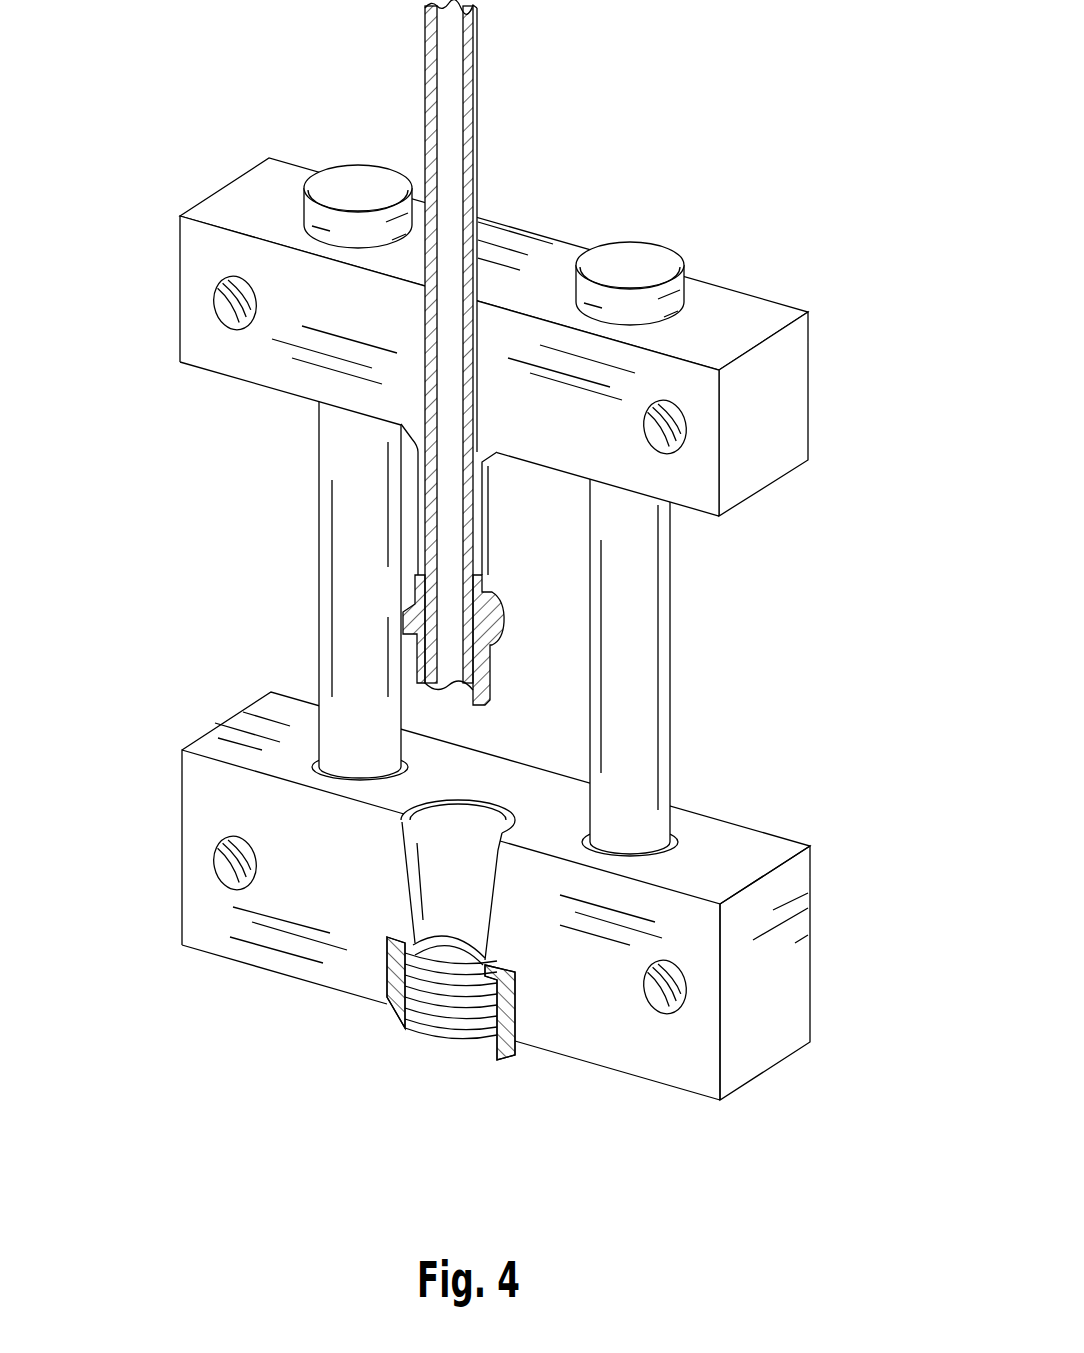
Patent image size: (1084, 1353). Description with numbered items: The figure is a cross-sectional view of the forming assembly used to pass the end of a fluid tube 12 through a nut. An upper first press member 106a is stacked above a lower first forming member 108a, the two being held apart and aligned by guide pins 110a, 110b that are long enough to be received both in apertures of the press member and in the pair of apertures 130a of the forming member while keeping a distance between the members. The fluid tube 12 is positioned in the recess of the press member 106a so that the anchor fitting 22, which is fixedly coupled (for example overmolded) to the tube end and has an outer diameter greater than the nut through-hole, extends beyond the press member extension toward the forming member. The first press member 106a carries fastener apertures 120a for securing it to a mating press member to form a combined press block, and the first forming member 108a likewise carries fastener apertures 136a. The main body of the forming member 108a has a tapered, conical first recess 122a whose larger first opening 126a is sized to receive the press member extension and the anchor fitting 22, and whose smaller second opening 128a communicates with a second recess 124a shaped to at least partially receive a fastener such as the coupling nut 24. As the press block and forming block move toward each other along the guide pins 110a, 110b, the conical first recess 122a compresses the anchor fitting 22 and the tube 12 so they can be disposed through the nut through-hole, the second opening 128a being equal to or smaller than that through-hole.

The fluid tube 12 is at (495, 58).
The anchor fitting 22 is at (493, 620).
The coupling nut 24 is at (503, 1063).
The first press member 106a is at (773, 408).
The first forming member 108a is at (788, 1005).
The guide pin 110a is at (362, 187).
The guide pin 110b is at (650, 263).
The fastener apertures 120a is at (212, 297).
The first recess 122a is at (452, 840).
The second recess 124a is at (370, 1022).
The first opening 126a is at (493, 817).
The second opening 128a is at (420, 957).
The apertures 130a is at (318, 752).
The fastener apertures 136a is at (212, 862).